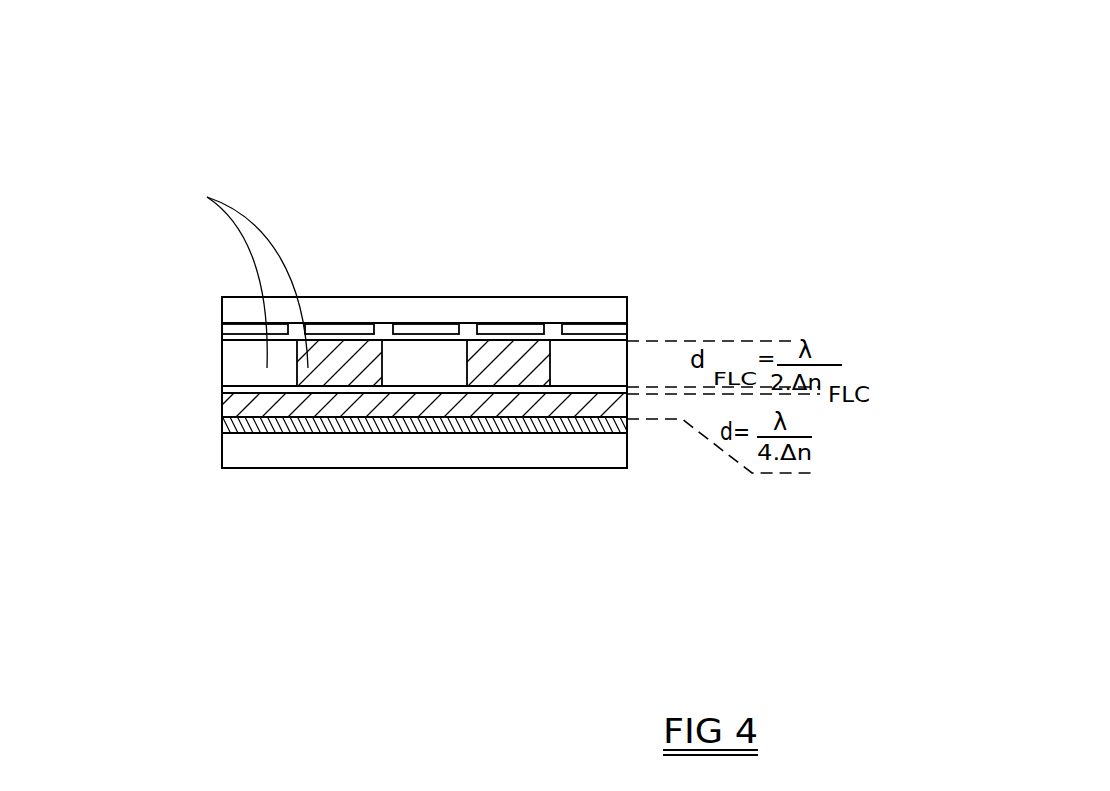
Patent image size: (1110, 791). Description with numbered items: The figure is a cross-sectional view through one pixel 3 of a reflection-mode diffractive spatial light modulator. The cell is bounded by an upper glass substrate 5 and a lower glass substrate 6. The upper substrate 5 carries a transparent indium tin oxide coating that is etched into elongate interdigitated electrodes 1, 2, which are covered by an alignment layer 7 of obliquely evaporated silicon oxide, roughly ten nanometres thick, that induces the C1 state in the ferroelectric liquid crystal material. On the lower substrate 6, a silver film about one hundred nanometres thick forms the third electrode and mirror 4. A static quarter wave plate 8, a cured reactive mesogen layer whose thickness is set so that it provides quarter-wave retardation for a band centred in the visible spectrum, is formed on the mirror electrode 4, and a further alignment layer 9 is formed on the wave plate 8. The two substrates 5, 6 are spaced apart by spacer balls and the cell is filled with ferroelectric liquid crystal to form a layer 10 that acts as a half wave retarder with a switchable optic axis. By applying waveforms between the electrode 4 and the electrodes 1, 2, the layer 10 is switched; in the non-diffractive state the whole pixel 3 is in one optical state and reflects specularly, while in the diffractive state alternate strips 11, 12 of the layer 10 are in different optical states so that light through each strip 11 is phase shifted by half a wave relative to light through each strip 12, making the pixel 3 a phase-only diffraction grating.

The interdigitated electrode 1 is at (437, 327).
The interdigitated electrode 2 is at (517, 353).
The pixel 3 is at (336, 105).
The silver mirror and electrode 4 is at (563, 425).
The upper glass substrate 5 is at (615, 310).
The lower glass substrate 6 is at (617, 450).
The alignment layer 7 is at (572, 275).
The static quarter wave plate 8 is at (482, 410).
The further alignment layer 9 is at (320, 390).
The ferroelectric liquid crystal layer 10 is at (333, 272).
The strip of FLC layer 11 is at (430, 358).
The strip of FLC layer 12 is at (547, 328).